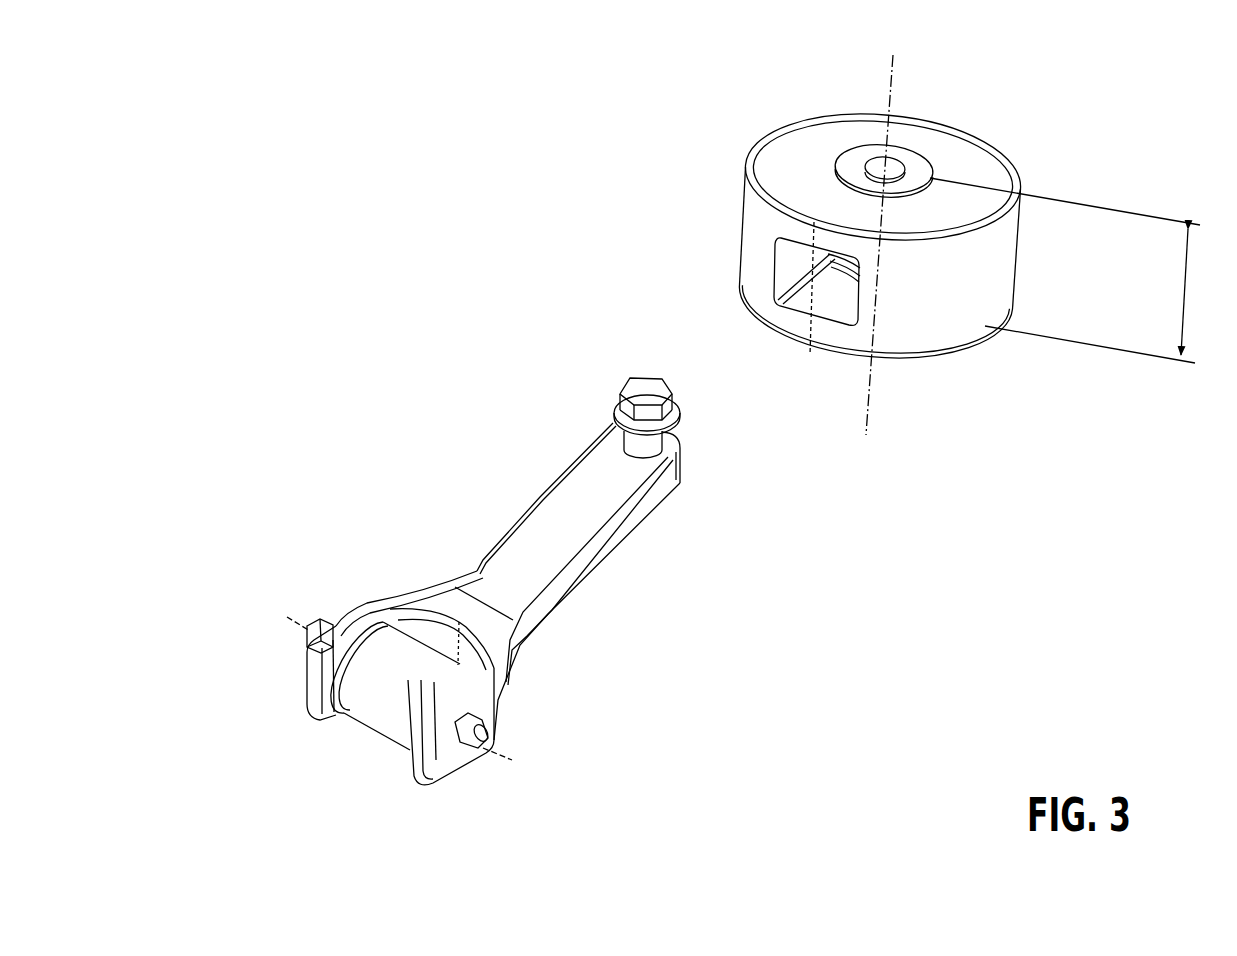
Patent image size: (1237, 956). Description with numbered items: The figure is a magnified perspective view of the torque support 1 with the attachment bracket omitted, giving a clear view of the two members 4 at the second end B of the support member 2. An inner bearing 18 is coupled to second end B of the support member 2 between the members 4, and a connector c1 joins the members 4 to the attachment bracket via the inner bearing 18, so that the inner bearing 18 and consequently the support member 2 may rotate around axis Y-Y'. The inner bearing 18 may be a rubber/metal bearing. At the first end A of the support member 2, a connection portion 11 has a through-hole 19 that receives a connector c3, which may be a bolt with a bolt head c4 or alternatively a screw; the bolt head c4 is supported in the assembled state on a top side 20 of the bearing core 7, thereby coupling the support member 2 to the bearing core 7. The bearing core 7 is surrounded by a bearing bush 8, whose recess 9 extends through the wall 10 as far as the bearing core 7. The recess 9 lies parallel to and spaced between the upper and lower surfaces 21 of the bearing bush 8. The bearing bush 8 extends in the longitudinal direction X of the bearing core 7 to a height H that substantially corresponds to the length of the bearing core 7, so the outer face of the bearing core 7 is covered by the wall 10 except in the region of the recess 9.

The torque support 1 is at (926, 488).
The support member 2 is at (616, 562).
The members 4 is at (302, 690).
The bearing core 7 is at (913, 170).
The bearing bush 8 is at (880, 257).
The recess 9 is at (818, 298).
The wall 10 is at (985, 270).
The connection portion 11 is at (606, 442).
The inner bearing 18 is at (367, 710).
The through-hole 19 is at (672, 445).
The top side 20 is at (857, 167).
The surfaces 21 is at (807, 148).
The first end A is at (687, 505).
The second end B is at (327, 565).
The height H is at (1069, 270).
The longitudinal direction X is at (878, 245).
The axis Y-Y' Y is at (400, 687).
The connector c1 is at (300, 640).
The connector c3 is at (618, 362).
The bolt head c4 is at (645, 390).